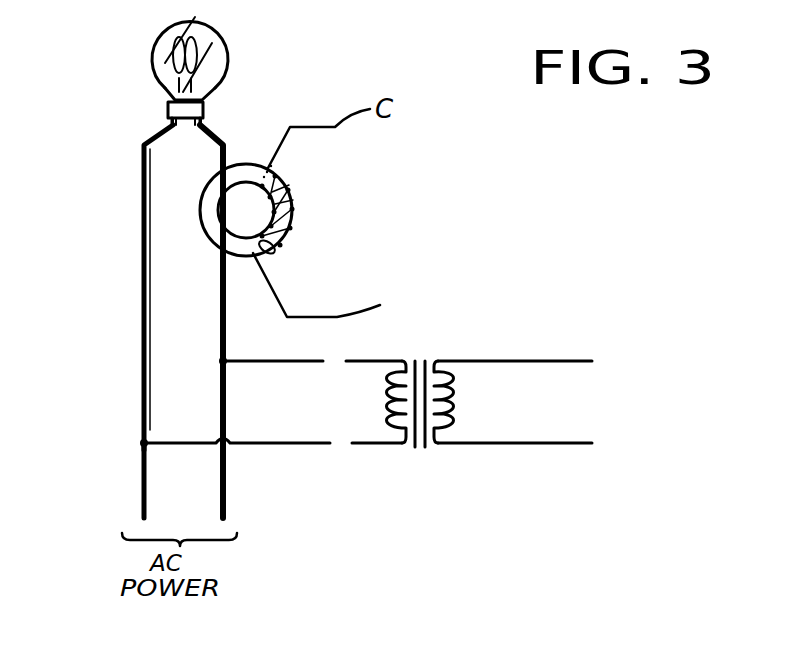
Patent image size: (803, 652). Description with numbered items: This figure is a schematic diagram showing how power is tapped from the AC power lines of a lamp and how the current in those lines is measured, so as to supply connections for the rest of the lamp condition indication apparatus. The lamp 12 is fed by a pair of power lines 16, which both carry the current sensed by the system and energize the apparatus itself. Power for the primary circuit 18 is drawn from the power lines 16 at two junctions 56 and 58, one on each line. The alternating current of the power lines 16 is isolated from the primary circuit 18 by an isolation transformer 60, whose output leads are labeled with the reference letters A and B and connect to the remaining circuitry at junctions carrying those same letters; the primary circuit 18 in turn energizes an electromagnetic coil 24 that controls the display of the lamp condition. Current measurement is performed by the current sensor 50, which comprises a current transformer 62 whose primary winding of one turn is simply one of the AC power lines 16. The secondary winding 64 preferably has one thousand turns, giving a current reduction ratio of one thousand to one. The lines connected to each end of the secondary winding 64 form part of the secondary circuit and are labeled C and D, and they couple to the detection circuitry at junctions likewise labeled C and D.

The lamp 12 is at (221, 50).
The power lines 16 is at (222, 470).
The primary circuit 18 is at (533, 448).
The electromagnetic coil 24 is at (273, 285).
The current sensor 50 is at (251, 147).
The junction 56 is at (143, 443).
The junction 58 is at (220, 361).
The isolation transformer 60 is at (413, 448).
The current transformer 62 is at (297, 177).
The secondary winding 64 is at (294, 199).